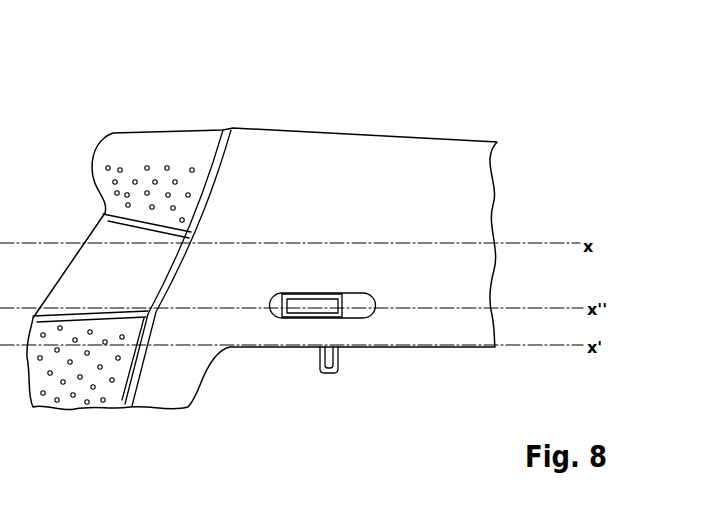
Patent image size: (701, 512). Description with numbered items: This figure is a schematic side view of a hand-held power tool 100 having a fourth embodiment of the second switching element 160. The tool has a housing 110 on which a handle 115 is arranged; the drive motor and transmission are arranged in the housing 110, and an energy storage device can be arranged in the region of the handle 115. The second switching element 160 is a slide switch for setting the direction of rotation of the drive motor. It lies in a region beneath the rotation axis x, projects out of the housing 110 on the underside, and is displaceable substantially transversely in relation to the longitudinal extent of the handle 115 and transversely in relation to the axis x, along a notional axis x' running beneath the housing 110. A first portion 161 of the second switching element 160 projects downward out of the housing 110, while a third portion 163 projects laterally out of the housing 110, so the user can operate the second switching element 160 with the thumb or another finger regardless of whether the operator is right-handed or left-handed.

The hand-held power tool 100 is at (252, 96).
The housing 110 is at (460, 215).
The handle 115 is at (92, 378).
The second switching element 160 is at (407, 392).
The first portion 161 is at (330, 374).
The third portion 163 is at (333, 303).